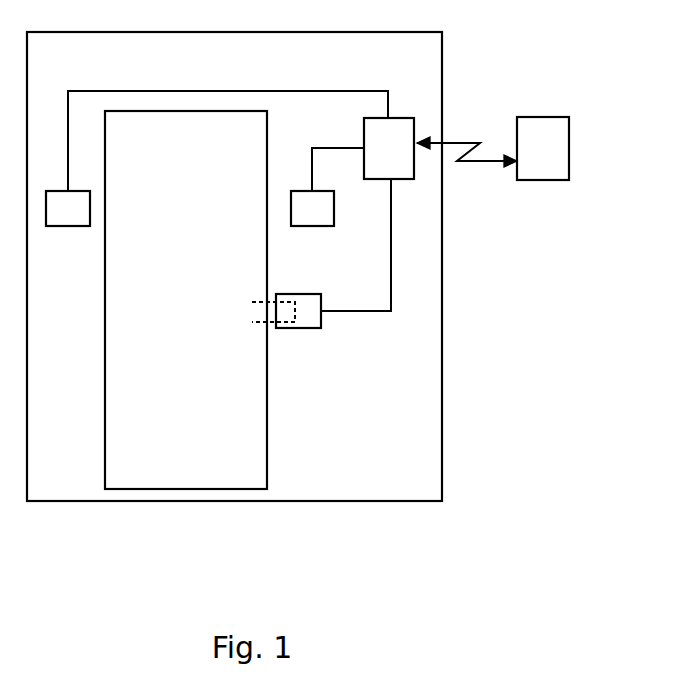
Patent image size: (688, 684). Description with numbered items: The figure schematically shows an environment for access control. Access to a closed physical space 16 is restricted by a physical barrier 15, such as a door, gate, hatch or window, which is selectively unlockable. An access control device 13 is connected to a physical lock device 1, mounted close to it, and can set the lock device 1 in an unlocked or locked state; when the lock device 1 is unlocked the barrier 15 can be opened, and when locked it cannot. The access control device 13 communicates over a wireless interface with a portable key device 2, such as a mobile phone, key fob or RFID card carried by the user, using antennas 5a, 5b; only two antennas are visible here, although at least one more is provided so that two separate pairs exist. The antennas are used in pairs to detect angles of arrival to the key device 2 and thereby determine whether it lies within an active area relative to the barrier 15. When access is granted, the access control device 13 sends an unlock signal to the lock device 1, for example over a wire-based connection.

The physical space 16 is at (250, 70).
The physical barrier 15 is at (203, 148).
The access control device 13 is at (374, 155).
The antenna 5a is at (67, 226).
The antenna 5b is at (334, 210).
The physical lock device 1 is at (300, 328).
The portable key device 2 is at (560, 137).